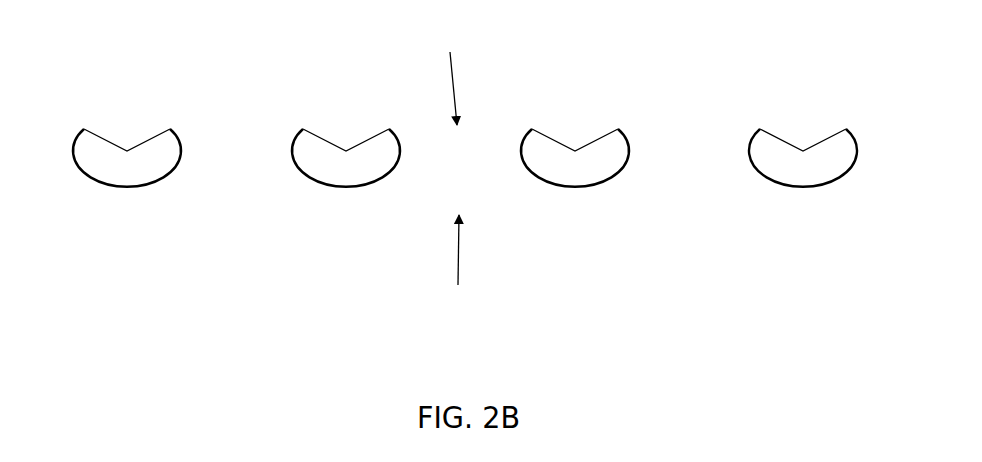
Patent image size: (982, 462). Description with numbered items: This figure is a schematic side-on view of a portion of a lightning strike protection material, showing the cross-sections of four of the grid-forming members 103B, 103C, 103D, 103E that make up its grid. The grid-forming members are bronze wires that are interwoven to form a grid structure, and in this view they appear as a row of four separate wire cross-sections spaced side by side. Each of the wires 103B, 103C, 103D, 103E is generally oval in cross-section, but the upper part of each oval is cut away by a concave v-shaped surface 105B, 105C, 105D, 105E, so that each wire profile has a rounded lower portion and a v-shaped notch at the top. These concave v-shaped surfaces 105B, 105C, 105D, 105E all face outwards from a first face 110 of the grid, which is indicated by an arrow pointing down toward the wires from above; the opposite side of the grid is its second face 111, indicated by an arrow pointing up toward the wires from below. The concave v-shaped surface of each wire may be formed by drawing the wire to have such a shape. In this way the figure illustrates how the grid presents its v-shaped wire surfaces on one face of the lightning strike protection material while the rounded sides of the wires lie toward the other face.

The grid-forming member 103B is at (820, 163).
The grid-forming member 103C is at (575, 163).
The grid-forming member 103D is at (352, 160).
The grid-forming member 103E is at (135, 168).
The concave v-shaped surface 105B is at (820, 138).
The concave v-shaped surface 105C is at (592, 140).
The concave v-shaped surface 105D is at (360, 142).
The concave v-shaped surface 105E is at (139, 147).
The first face 110 is at (449, 64).
The second face 111 is at (457, 275).